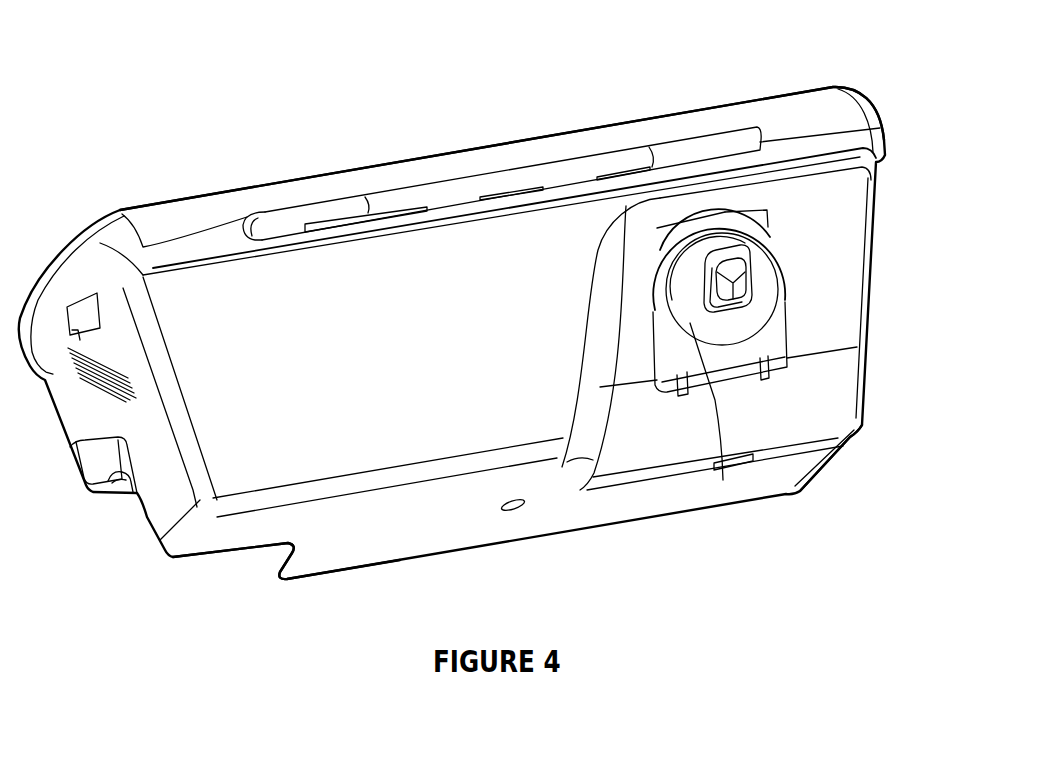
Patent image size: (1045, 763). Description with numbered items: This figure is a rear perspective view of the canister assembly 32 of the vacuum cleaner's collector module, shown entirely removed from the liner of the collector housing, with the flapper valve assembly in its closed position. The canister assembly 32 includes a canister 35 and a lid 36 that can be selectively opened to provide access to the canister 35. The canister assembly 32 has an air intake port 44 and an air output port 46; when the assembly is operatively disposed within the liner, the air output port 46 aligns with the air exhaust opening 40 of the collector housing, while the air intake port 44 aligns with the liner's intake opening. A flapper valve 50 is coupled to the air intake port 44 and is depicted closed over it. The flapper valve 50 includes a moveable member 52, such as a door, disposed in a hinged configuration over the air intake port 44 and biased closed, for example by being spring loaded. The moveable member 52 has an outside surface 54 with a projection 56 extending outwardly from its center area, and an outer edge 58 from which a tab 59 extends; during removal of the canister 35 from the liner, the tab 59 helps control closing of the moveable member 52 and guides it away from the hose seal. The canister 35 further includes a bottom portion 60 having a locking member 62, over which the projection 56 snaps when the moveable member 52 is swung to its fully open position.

The canister assembly 32 is at (158, 140).
The canister 35 is at (223, 472).
The lid 36 is at (760, 97).
The air exhaust opening 40 is at (120, 493).
The air intake port 44 is at (717, 232).
The air output port 46 is at (130, 495).
The flapper valve 50 is at (790, 336).
The moveable member 52 is at (782, 305).
The outside surface 54 is at (767, 290).
The projection 56 is at (752, 283).
The outer edge 58 is at (733, 278).
The tab 59 is at (747, 245).
The bottom portion 60 is at (813, 407).
The locking member 62 is at (737, 460).